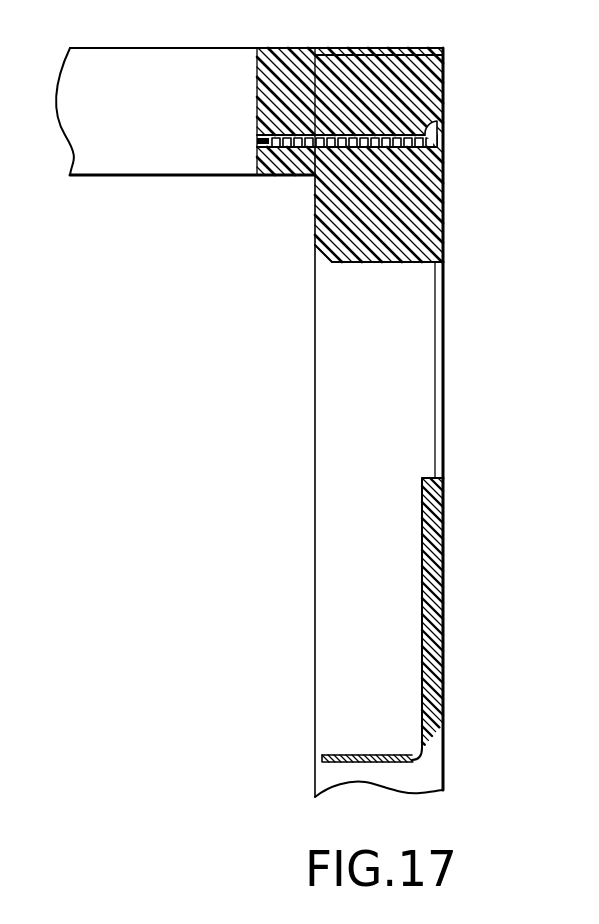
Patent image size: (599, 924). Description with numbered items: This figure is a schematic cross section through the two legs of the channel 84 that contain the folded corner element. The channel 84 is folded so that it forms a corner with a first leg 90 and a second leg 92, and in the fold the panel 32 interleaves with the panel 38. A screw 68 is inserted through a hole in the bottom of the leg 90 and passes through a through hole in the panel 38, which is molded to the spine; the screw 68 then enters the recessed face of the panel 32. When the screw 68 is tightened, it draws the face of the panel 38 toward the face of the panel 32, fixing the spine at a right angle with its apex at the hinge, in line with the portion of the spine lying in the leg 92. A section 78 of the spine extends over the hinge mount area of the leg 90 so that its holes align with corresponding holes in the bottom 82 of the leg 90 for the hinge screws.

The panel 32 is at (273, 48).
The panel 38 is at (445, 72).
The screw 68 is at (433, 120).
The section 78 is at (443, 512).
The bottom 82 is at (445, 310).
The channel 84 is at (127, 47).
The leg 90 is at (440, 778).
The leg 92 is at (144, 168).